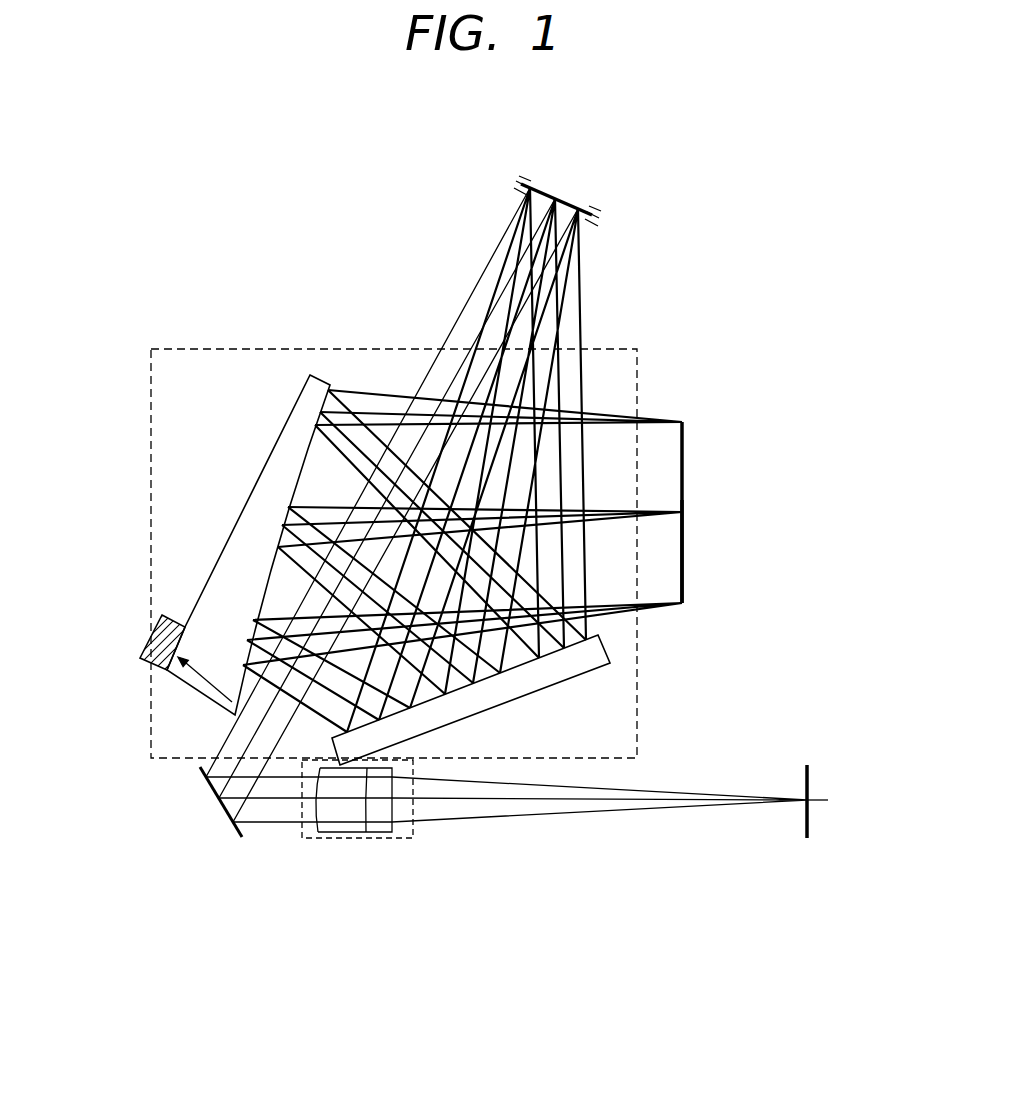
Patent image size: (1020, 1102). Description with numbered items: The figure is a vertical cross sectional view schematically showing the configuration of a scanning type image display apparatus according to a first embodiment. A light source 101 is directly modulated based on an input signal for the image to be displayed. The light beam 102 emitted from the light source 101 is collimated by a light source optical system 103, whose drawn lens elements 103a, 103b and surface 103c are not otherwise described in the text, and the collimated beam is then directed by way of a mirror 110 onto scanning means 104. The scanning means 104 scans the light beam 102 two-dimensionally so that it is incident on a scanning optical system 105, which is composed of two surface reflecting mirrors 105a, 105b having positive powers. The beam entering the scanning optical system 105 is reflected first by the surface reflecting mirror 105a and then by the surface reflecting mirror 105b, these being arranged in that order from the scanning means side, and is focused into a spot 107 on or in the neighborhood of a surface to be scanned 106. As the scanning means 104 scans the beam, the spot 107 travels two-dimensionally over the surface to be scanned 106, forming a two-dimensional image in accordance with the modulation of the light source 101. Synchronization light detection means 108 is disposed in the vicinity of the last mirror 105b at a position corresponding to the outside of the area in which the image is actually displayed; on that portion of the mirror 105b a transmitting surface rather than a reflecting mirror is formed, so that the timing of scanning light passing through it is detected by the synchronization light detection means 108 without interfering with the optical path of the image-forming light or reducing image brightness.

The light source 101 is at (807, 800).
The light beam 102 is at (650, 810).
The light source optical system 103 is at (380, 840).
The first lens 103a is at (407, 840).
The second lens 103b is at (360, 840).
The lens surface 103c is at (318, 805).
The scanning means 104 is at (572, 192).
The scanning optical system 105 is at (250, 348).
The surface reflecting mirror 105a is at (540, 690).
The surface reflecting mirror 105b is at (241, 511).
The surface to be scanned 106 is at (682, 448).
The spot 107 is at (682, 512).
The synchronization light detection means 108 is at (143, 644).
The reflecting mirror 110 is at (225, 806).